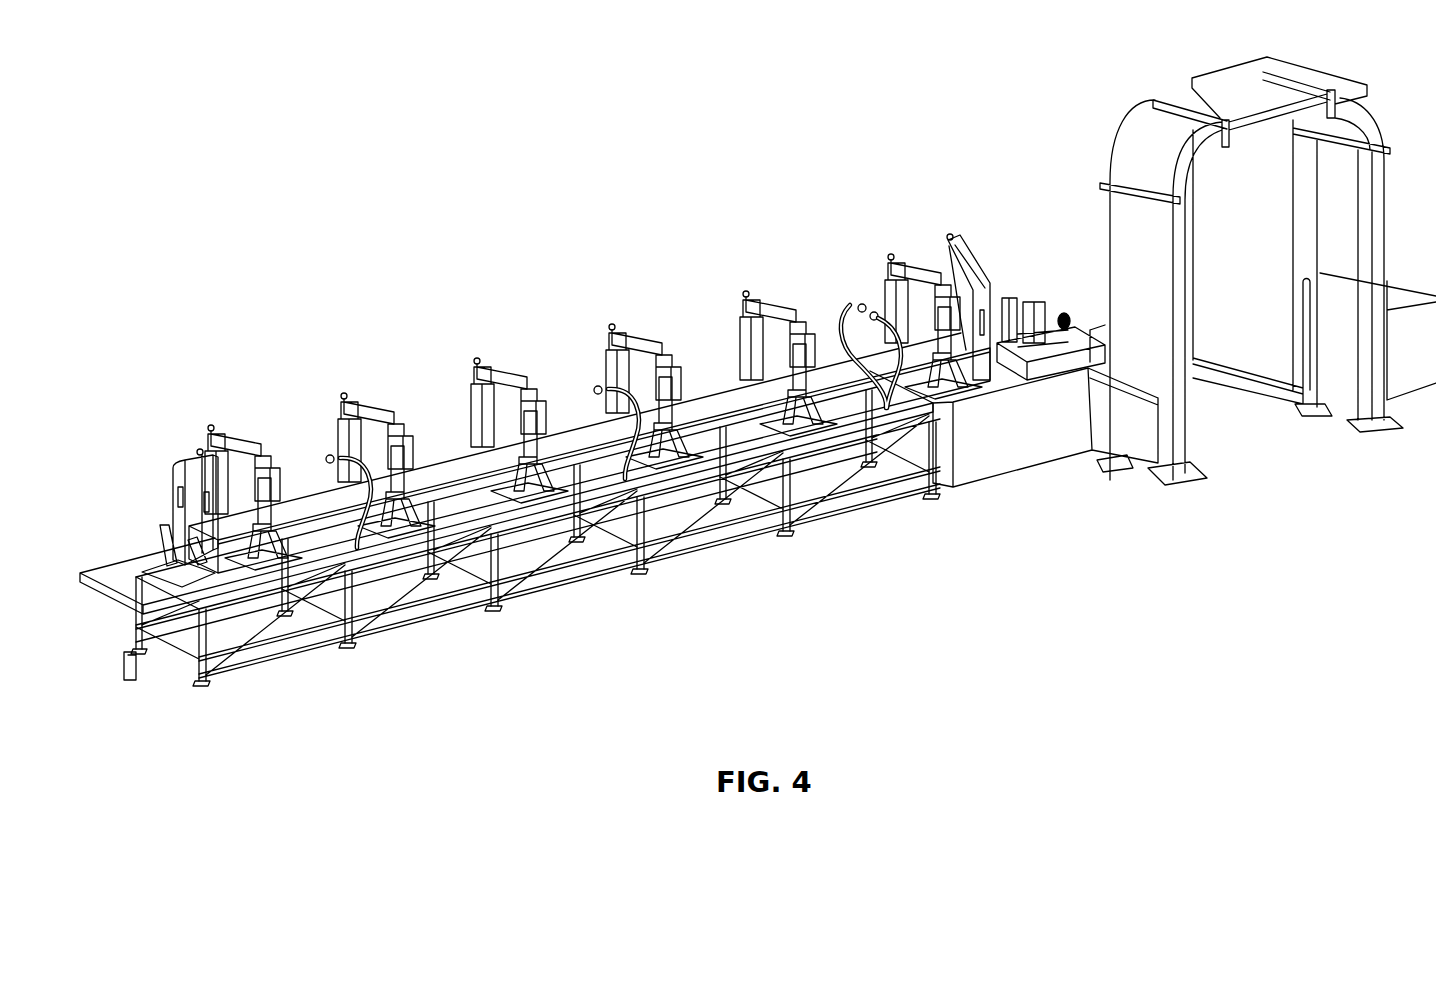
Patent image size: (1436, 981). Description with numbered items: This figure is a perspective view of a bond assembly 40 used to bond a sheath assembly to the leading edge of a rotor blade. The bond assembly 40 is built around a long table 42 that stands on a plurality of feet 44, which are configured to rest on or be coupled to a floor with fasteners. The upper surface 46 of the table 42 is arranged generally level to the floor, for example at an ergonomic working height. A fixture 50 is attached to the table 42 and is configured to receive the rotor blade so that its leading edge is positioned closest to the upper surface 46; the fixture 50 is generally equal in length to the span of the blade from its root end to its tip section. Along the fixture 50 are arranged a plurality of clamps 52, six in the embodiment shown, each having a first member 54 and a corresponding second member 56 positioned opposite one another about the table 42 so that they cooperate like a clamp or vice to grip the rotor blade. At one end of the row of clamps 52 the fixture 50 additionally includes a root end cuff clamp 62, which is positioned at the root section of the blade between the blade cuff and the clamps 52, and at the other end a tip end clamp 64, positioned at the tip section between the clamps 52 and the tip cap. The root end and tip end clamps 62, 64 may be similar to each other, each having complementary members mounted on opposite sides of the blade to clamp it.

The bond assembly 40 is at (358, 717).
The table 42 is at (140, 601).
The feet 44 is at (500, 612).
The upper surface 46 is at (332, 630).
The fixture 50 is at (688, 250).
The clamps 52 is at (232, 422).
The first member 54 is at (217, 447).
The second member 56 is at (272, 492).
The root end cuff clamp 62 is at (988, 252).
The tip end clamp 64 is at (172, 466).